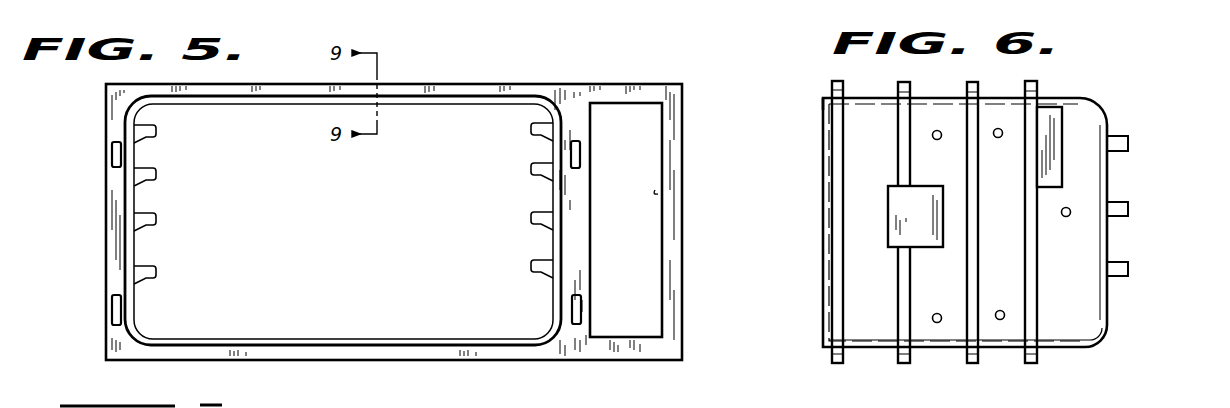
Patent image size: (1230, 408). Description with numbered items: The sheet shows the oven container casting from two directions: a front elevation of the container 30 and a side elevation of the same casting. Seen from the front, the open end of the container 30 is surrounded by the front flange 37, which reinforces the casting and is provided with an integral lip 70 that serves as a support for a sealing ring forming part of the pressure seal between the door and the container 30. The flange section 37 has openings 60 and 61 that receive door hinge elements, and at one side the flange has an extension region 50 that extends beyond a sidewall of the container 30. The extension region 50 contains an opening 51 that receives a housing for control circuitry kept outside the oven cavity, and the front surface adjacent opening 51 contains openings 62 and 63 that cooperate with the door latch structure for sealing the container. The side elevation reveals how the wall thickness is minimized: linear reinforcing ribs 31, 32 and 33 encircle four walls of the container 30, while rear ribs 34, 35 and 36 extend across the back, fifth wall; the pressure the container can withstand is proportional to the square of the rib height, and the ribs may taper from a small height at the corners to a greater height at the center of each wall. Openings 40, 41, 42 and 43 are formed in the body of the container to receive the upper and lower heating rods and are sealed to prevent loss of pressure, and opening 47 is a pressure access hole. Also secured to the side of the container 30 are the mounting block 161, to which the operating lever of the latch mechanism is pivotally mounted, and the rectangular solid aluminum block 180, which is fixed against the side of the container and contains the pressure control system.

In FIG. 5, the container 30 is at (518, 75).
In FIG. 6, the container 30 is at (1014, 241).
In FIG. 6, the reinforcing rib 31 is at (908, 82).
In FIG. 6, the reinforcing rib 32 is at (977, 82).
In FIG. 6, the reinforcing rib 33 is at (1035, 81).
In FIG. 6, the rear rib 34 is at (1128, 143).
In FIG. 6, the rear rib 35 is at (1128, 208).
In FIG. 6, the rear rib 36 is at (1128, 268).
In FIG. 5, the front flange 37 is at (420, 84).
In FIG. 6, the front flange 37 is at (834, 80).
In FIG. 6, the opening 40 is at (935, 140).
In FIG. 6, the opening 41 is at (996, 138).
In FIG. 6, the opening 42 is at (950, 300).
In FIG. 6, the opening 43 is at (1013, 298).
In FIG. 6, the opening 47 is at (1063, 217).
In FIG. 5, the extension region 50 is at (630, 84).
In FIG. 5, the opening 51 is at (655, 191).
In FIG. 5, the opening 60 is at (112, 154).
In FIG. 5, the opening 61 is at (112, 313).
In FIG. 5, the opening 62 is at (580, 154).
In FIG. 5, the opening 63 is at (581, 306).
In FIG. 5, the lip 70 is at (258, 107).
In FIG. 6, the lip 70 is at (823, 100).
In FIG. 6, the mounting block 161 is at (888, 205).
In FIG. 6, the block 180 is at (1048, 128).